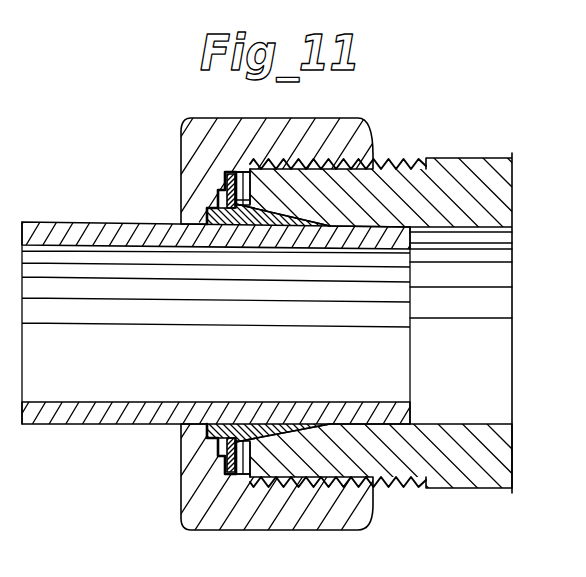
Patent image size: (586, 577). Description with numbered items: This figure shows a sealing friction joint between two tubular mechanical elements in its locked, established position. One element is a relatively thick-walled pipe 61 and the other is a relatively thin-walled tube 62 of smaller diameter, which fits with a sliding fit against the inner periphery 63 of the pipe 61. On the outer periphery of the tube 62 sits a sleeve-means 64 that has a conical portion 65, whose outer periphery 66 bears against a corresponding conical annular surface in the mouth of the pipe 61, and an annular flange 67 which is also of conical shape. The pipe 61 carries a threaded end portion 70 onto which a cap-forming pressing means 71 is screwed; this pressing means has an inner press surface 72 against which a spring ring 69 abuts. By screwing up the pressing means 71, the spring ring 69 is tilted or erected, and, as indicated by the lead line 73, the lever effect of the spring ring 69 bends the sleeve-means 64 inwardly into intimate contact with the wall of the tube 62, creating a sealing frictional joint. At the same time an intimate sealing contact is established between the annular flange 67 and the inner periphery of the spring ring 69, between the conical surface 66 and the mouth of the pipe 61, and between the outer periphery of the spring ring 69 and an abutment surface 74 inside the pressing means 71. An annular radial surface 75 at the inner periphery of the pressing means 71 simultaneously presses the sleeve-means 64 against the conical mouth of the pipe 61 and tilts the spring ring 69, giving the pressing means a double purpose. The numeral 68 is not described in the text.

The pipe 61 is at (490, 203).
The tube 62 is at (73, 237).
The inner periphery 63 is at (487, 423).
The sleeve-means 64 is at (210, 248).
The conical portion 65 is at (275, 213).
The outer periphery 66 is at (269, 405).
The annular flange 67 is at (200, 436).
The ring 68 is at (248, 204).
The spring ring 69 is at (222, 462).
The threaded end portion 70 is at (398, 170).
The pressing means 71 is at (193, 142).
The inner press surface 72 is at (224, 180).
The lead line 73 is at (269, 405).
The abutment surface 74 is at (222, 470).
The annular radial surface 75 is at (207, 212).